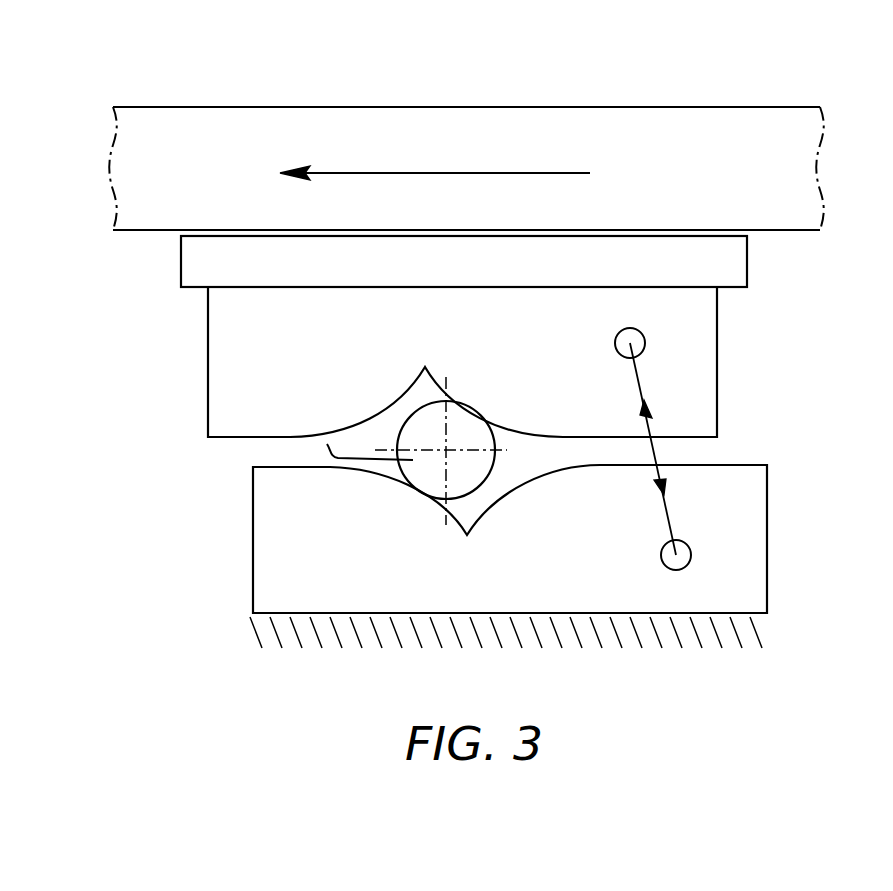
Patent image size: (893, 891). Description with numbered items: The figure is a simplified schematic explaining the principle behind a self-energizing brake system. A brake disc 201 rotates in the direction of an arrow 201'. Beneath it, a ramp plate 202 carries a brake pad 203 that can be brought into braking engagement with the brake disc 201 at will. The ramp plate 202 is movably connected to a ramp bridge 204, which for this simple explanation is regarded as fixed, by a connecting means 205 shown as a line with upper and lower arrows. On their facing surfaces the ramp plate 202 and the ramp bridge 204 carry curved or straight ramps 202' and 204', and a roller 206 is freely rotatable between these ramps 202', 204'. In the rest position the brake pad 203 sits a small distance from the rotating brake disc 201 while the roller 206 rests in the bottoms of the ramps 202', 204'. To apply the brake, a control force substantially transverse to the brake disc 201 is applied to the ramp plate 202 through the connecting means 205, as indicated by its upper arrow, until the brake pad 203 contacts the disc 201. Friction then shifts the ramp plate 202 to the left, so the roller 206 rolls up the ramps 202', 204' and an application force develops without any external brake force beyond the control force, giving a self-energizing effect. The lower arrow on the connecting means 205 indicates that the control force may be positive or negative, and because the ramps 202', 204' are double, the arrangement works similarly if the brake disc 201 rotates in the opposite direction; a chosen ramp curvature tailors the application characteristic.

The brake disc 201 is at (431, 168).
The arrow 201' is at (435, 151).
The ramp plate 202 is at (412, 362).
The ramps 202' is at (429, 395).
The brake pad 203 is at (205, 267).
The ramp bridge 204 is at (457, 556).
The ramps 204' is at (455, 503).
The connecting means 205 is at (652, 449).
The roller 206 is at (327, 444).